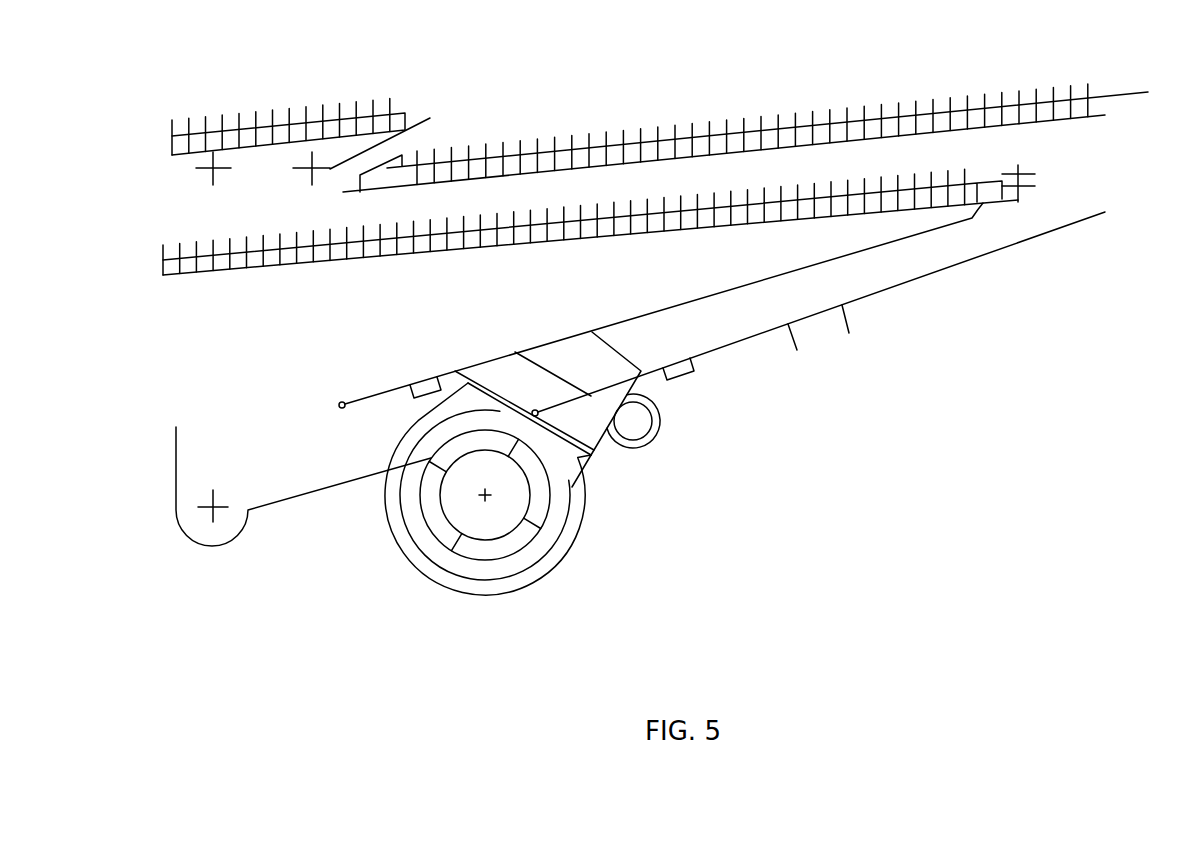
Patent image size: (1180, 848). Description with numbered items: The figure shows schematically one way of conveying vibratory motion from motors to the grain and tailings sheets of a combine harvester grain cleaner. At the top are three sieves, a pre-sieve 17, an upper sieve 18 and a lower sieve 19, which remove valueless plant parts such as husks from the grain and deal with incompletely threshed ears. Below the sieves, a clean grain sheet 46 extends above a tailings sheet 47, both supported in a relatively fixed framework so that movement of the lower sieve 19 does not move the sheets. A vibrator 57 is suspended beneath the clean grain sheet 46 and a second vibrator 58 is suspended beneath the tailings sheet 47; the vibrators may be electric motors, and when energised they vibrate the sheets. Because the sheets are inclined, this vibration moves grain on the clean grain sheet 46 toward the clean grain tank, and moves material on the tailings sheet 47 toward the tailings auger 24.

The pre-sieve 17 is at (317, 128).
The upper sieve 18 is at (467, 147).
The lower sieve 19 is at (683, 197).
The clean grain sheet 46 is at (683, 303).
The tailings sheet 47 is at (757, 335).
The vibrator 57 is at (420, 380).
The second vibrator 58 is at (678, 388).
The tailings auger 24 is at (455, 568).